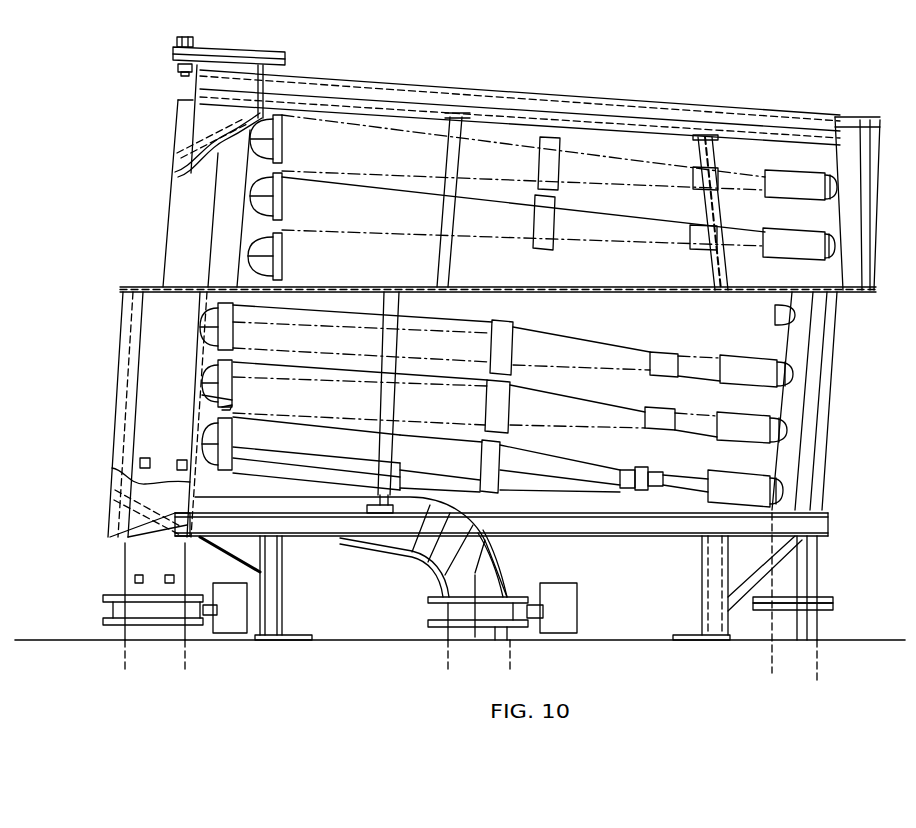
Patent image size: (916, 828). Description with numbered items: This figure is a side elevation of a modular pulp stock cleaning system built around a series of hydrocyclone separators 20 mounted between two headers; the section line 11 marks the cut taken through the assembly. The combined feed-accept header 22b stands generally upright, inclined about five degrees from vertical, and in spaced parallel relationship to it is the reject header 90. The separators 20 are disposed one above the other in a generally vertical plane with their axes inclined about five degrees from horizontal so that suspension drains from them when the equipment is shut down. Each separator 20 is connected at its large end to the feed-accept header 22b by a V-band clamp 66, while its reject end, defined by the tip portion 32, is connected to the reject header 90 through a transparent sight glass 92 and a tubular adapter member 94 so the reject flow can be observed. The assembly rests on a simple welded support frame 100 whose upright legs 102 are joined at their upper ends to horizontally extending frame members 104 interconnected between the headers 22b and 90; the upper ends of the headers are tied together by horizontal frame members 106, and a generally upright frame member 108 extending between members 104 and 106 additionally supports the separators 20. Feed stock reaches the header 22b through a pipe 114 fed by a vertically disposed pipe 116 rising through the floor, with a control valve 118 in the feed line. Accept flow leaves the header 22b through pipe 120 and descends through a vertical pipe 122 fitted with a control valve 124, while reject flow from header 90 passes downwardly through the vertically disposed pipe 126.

The section line 11- 11 is at (90, 432).
The hydrocyclone separator 20 is at (518, 188).
The feed-accept header 22b is at (182, 225).
The tip portion 32 is at (659, 473).
The V-band clamp 66 is at (226, 404).
The reject header 90 is at (822, 356).
The transparent sight glass 92 is at (682, 471).
The tubular adapter member 94 is at (743, 480).
The support frame 100 is at (501, 563).
The upright leg 102 is at (284, 600).
The horizontally extending frame member 104 is at (583, 511).
The horizontally extending frame member 106 is at (637, 108).
The upright frame member 108 is at (448, 243).
The pipe 114 is at (495, 550).
The vertically disposed pipe 116 is at (503, 655).
The control valve 118 is at (517, 607).
The pipe 120 is at (137, 558).
The vertical pipe 122 is at (174, 657).
The control valve 124 is at (188, 610).
The vertically disposed pipe 126 is at (818, 628).